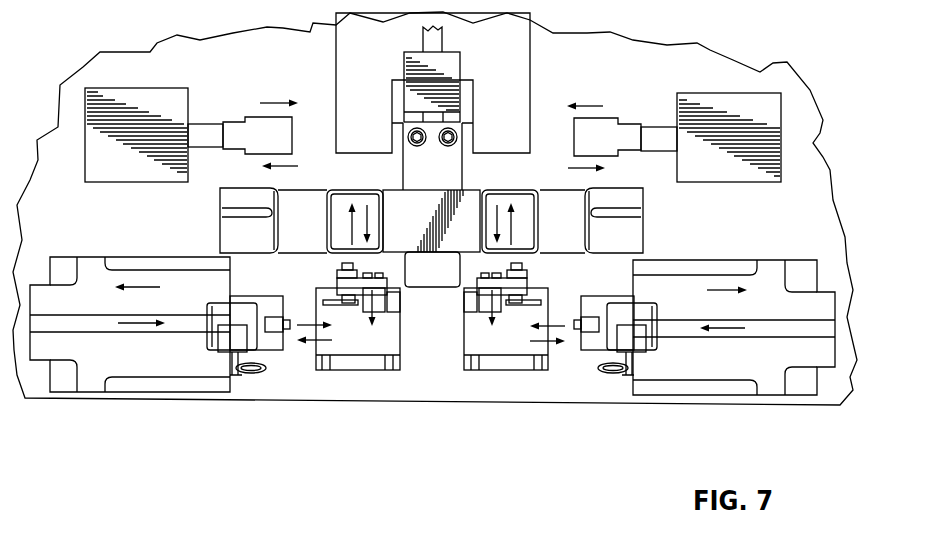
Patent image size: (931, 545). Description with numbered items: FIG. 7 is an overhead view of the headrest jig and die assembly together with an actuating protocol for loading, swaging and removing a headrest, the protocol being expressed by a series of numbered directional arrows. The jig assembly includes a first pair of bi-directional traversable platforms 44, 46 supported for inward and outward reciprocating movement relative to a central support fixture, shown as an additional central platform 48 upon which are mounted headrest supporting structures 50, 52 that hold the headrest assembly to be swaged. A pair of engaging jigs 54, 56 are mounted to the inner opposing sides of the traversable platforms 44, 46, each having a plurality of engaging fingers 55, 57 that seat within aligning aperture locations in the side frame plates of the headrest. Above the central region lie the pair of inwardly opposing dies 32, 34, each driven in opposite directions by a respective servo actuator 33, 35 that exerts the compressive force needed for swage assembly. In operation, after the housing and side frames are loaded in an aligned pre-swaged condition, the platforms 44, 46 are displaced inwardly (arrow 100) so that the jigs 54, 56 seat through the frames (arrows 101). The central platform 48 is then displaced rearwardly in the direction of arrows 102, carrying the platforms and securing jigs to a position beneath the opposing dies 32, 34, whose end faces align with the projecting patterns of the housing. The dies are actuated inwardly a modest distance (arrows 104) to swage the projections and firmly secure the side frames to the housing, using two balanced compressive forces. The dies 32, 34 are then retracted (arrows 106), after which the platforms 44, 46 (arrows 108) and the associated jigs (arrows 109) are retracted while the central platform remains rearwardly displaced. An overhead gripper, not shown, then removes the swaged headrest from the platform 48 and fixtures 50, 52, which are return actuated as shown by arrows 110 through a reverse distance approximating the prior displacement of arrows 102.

The inwardly opposing die 32 is at (274, 145).
The servo actuator 33 is at (128, 171).
The inwardly opposing die 34 is at (600, 145).
The servo actuator 35 is at (721, 175).
The bi-directional traversable platform 44 is at (109, 365).
The bi-directional traversable platform 46 is at (698, 368).
The central platform 48 is at (437, 340).
The headrest supporting structure 50 is at (346, 368).
The headrest supporting structure 52 is at (520, 368).
The engaging jig 54 is at (222, 345).
The engaging fingers 55 is at (270, 333).
The engaging jig 56 is at (636, 345).
The engaging fingers 57 is at (590, 333).
The inward displacement arrow 100 is at (143, 325).
The jig seating arrow 101 is at (303, 325).
The rearward displacement arrow 102 is at (350, 213).
The die actuation arrow 104 is at (274, 100).
The die retraction arrow 106 is at (278, 167).
The platform retraction arrow 108 is at (138, 288).
The jig retraction arrow 109 is at (319, 343).
The return actuation arrow 110 is at (371, 217).